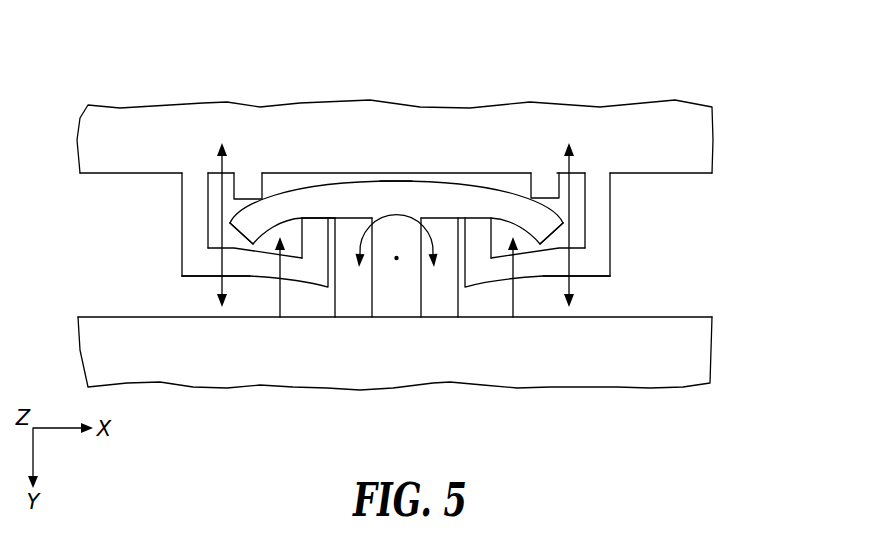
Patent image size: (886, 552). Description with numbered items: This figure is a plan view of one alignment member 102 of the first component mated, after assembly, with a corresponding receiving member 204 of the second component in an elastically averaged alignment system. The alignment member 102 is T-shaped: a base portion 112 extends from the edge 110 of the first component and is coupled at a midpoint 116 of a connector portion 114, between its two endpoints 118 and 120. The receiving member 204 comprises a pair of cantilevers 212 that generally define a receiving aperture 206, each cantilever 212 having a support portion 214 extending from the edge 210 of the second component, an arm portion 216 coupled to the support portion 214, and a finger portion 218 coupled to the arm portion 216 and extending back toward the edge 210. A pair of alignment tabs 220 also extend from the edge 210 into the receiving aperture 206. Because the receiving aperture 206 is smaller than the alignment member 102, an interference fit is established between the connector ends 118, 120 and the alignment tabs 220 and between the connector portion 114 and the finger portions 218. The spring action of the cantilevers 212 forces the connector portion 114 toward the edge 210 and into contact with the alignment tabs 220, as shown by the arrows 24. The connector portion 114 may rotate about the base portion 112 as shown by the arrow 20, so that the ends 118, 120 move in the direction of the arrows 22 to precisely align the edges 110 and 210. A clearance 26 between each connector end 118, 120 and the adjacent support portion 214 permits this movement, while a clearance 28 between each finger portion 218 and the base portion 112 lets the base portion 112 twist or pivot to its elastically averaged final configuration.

The arrow 20 is at (402, 221).
The arrows 22 is at (221, 261).
The arrows 24 is at (276, 283).
The clearance 26 is at (243, 255).
The clearance 28 is at (442, 236).
The alignment member 102 is at (727, 356).
The edge 110 is at (586, 317).
The base portion 112 is at (407, 292).
The connector portion 114 is at (347, 203).
The midpoint 116 is at (395, 205).
The endpoint 118 is at (269, 178).
The endpoint 120 is at (524, 178).
The receiving member 204 is at (693, 92).
The receiving aperture 206 is at (406, 171).
The edge 210 is at (667, 176).
The cantilever 212 is at (168, 272).
The support portion 214 is at (193, 198).
The arm portion 216 is at (250, 268).
The finger portion 218 is at (336, 222).
The alignment tab 220 is at (248, 190).